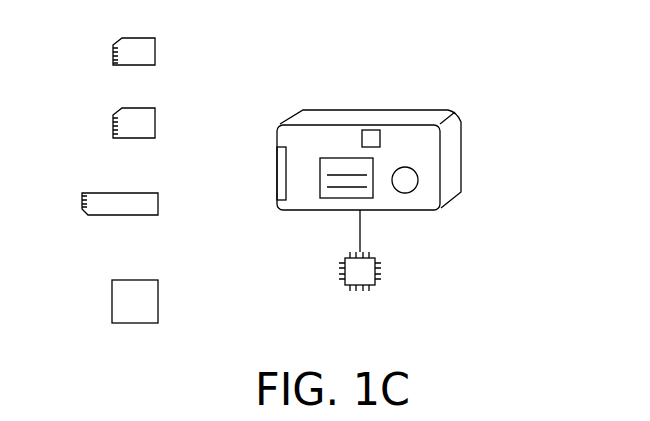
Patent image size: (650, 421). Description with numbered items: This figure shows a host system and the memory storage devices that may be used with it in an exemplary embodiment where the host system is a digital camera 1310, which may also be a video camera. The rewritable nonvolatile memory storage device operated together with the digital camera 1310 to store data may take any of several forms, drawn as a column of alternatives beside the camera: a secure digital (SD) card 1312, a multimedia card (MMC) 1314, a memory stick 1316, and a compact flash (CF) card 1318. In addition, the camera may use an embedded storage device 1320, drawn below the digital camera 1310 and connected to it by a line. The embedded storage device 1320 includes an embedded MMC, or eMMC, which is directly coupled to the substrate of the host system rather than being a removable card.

The digital camera 1310 is at (405, 160).
The secure digital (SD) card 1312 is at (166, 35).
The multimedia card (MMC) 1314 is at (166, 111).
The memory stick 1316 is at (141, 187).
The compact flash (CF) card 1318 is at (166, 288).
The embedded storage device 1320 is at (390, 269).